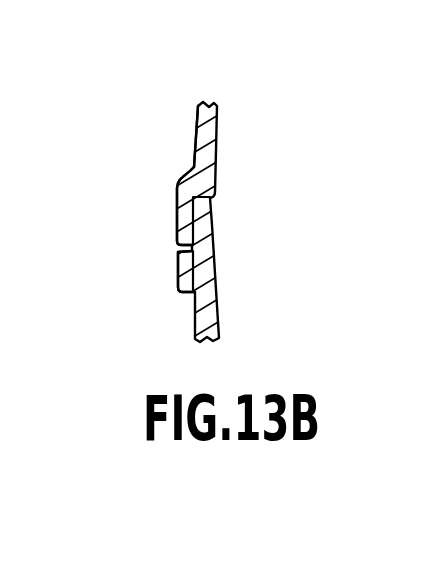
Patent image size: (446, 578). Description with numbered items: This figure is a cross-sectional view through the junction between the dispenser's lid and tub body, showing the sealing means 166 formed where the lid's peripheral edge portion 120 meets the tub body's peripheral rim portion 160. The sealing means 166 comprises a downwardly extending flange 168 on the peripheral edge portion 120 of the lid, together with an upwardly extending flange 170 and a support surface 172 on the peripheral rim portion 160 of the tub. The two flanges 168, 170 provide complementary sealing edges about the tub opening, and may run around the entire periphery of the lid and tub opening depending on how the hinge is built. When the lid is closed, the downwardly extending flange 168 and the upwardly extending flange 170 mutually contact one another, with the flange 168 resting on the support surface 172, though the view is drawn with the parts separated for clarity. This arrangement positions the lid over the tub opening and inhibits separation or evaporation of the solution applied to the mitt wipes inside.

The peripheral edge portion 120 is at (168, 127).
The peripheral rim portion 160 is at (261, 308).
The sealing means 166 is at (136, 213).
The downwardly extending flange 168 is at (194, 158).
The upwardly extending flange 170 is at (213, 242).
The support surface 172 is at (179, 251).